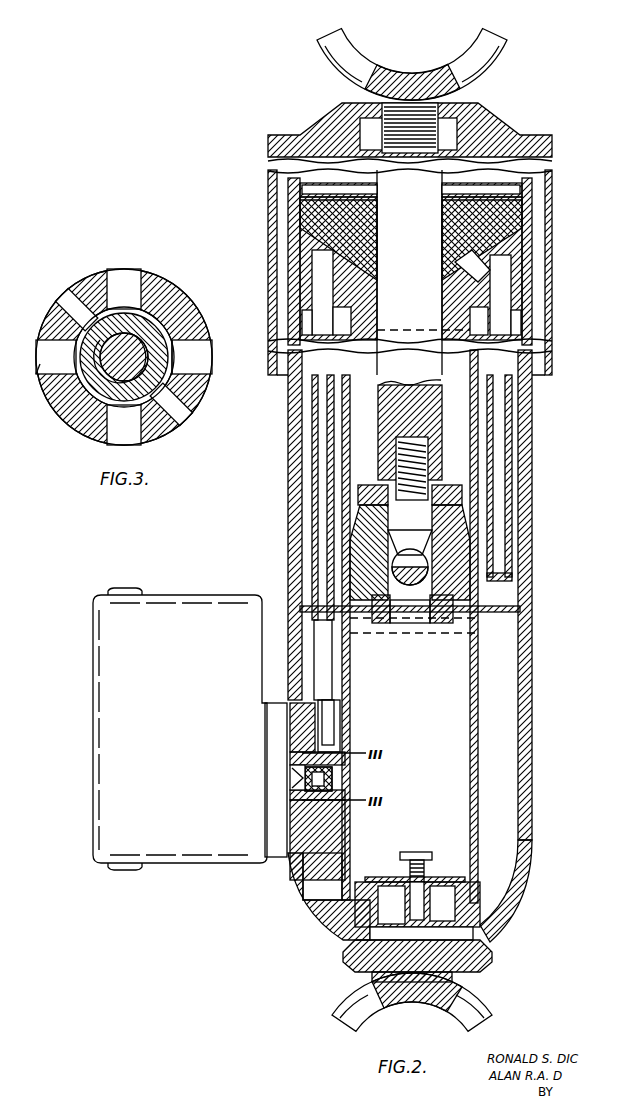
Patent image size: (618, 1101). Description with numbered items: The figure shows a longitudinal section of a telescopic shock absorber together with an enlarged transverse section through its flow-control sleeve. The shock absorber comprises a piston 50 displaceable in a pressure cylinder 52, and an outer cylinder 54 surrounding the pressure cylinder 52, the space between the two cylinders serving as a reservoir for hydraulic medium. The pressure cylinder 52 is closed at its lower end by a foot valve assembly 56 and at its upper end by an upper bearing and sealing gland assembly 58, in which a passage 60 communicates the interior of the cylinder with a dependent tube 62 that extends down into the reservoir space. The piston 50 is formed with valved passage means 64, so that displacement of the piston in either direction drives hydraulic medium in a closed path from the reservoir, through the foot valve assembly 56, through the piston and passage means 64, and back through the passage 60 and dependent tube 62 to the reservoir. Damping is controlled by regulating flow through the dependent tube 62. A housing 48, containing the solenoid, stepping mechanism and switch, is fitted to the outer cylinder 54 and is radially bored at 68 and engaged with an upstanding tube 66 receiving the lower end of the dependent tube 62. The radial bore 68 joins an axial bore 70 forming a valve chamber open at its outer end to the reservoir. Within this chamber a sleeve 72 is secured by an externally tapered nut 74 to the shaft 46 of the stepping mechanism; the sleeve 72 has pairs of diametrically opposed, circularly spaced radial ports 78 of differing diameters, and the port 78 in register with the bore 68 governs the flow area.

In FIG. 3, the shaft 46 is at (102, 352).
In FIG. 2, the shaft 46 is at (294, 778).
In FIG. 2, the housing 48 is at (93, 800).
In FIG. 2, the piston 50 is at (480, 620).
In FIG. 2, the pressure cylinder 52 is at (473, 682).
In FIG. 2, the outer cylinder 54 is at (530, 719).
In FIG. 2, the foot valve assembly 56 is at (372, 942).
In FIG. 2, the upper bearing and sealing gland assembly 58 is at (453, 327).
In FIG. 2, the passage 60 is at (409, 244).
In FIG. 2, the dependent tube 62 is at (310, 487).
In FIG. 2, the valved passage means 64 is at (437, 557).
In FIG. 2, the upstanding tube 66 is at (333, 688).
In FIG. 2, the radial bore 68 is at (337, 733).
In FIG. 2, the axial bore 70 is at (293, 748).
In FIG. 3, the sleeve 72 is at (52, 374).
In FIG. 2, the sleeve 72 is at (291, 800).
In FIG. 3, the externally tapered nut 74 is at (97, 312).
In FIG. 2, the externally tapered nut 74 is at (330, 774).
In FIG. 3, the radial ports 78 is at (207, 357).